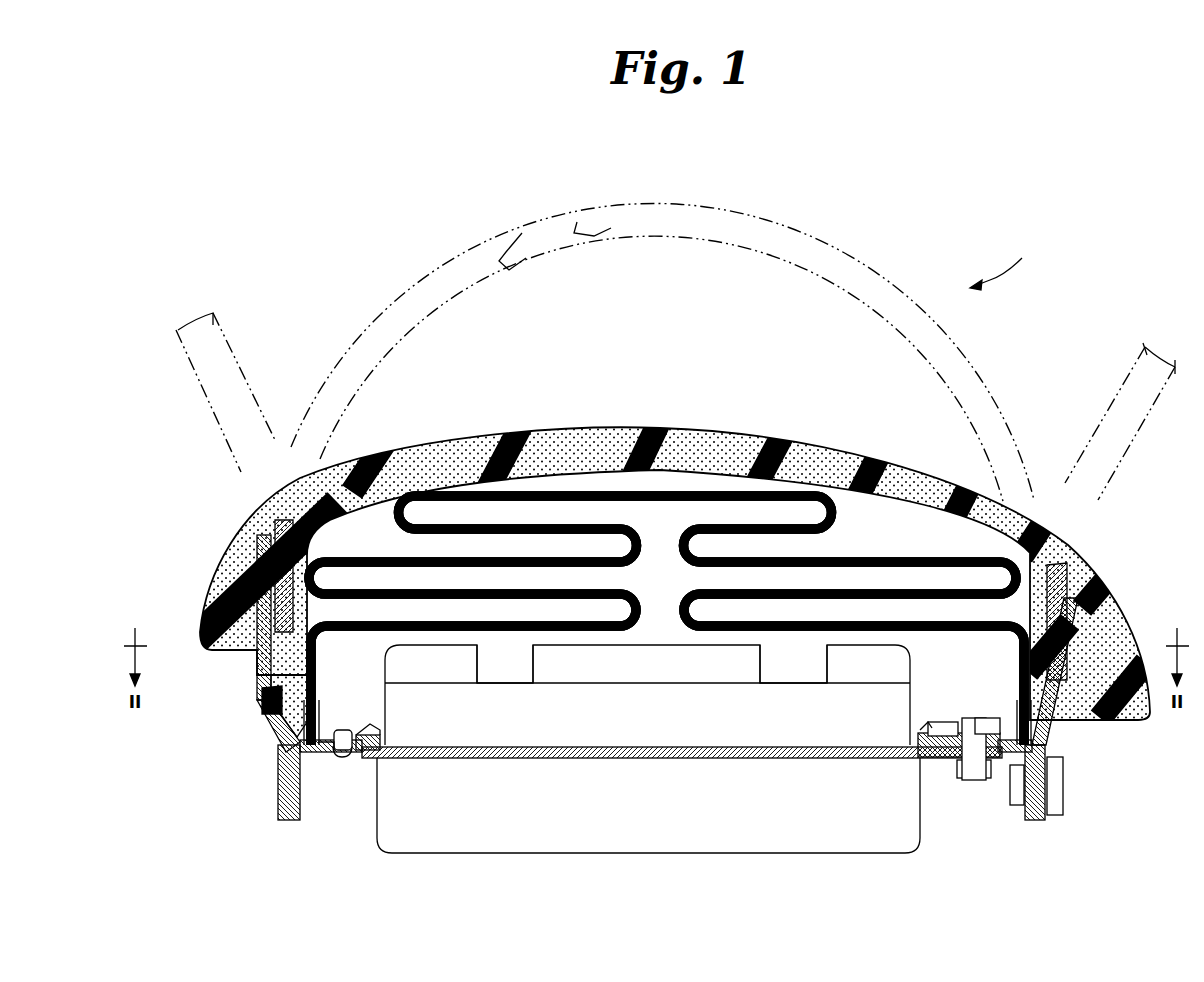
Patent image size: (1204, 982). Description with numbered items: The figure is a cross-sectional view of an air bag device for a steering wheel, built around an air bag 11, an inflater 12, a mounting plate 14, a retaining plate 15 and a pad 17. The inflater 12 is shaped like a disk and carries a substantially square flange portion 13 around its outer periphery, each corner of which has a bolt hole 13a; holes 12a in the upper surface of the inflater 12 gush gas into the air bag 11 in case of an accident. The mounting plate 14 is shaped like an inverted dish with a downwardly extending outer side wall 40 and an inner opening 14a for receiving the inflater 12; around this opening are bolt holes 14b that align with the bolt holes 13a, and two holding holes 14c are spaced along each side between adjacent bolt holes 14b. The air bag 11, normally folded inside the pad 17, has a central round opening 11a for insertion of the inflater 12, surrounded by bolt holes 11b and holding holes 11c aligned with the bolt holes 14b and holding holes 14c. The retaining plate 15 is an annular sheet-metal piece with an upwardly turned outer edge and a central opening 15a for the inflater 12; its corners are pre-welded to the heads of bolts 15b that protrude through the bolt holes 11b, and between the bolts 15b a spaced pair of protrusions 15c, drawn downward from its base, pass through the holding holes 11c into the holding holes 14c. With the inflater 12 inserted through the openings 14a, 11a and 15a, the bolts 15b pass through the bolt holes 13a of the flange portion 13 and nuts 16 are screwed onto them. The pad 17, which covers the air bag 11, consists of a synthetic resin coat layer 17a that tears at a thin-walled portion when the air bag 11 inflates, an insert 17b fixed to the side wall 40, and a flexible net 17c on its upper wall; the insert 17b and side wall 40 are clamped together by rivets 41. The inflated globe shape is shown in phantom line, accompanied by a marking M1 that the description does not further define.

The air bag 11 is at (562, 250).
The round opening 11a is at (385, 745).
The bolt holes 11b is at (940, 722).
The holding holes 11c is at (350, 742).
The inflater 12 is at (663, 850).
The holes 12a is at (480, 684).
The flange portion 13 is at (578, 757).
The bolt hole 13a is at (950, 760).
The mounting plate 14 is at (305, 822).
The inner opening 14a is at (388, 750).
The bolt holes 14b is at (978, 778).
The holding holes 14c is at (346, 758).
The retaining plate 15 is at (335, 710).
The opening 15a is at (380, 722).
The bolts 15b is at (986, 718).
The protrusions 15c is at (332, 752).
The nuts 16 is at (957, 772).
The pad 17 is at (722, 434).
The coat layer 17a is at (792, 240).
The insert 17b is at (256, 628).
The net 17c is at (428, 452).
The side wall 40 is at (1032, 822).
The rivets 41 is at (1062, 790).
The opening movement direction M1 is at (1005, 260).